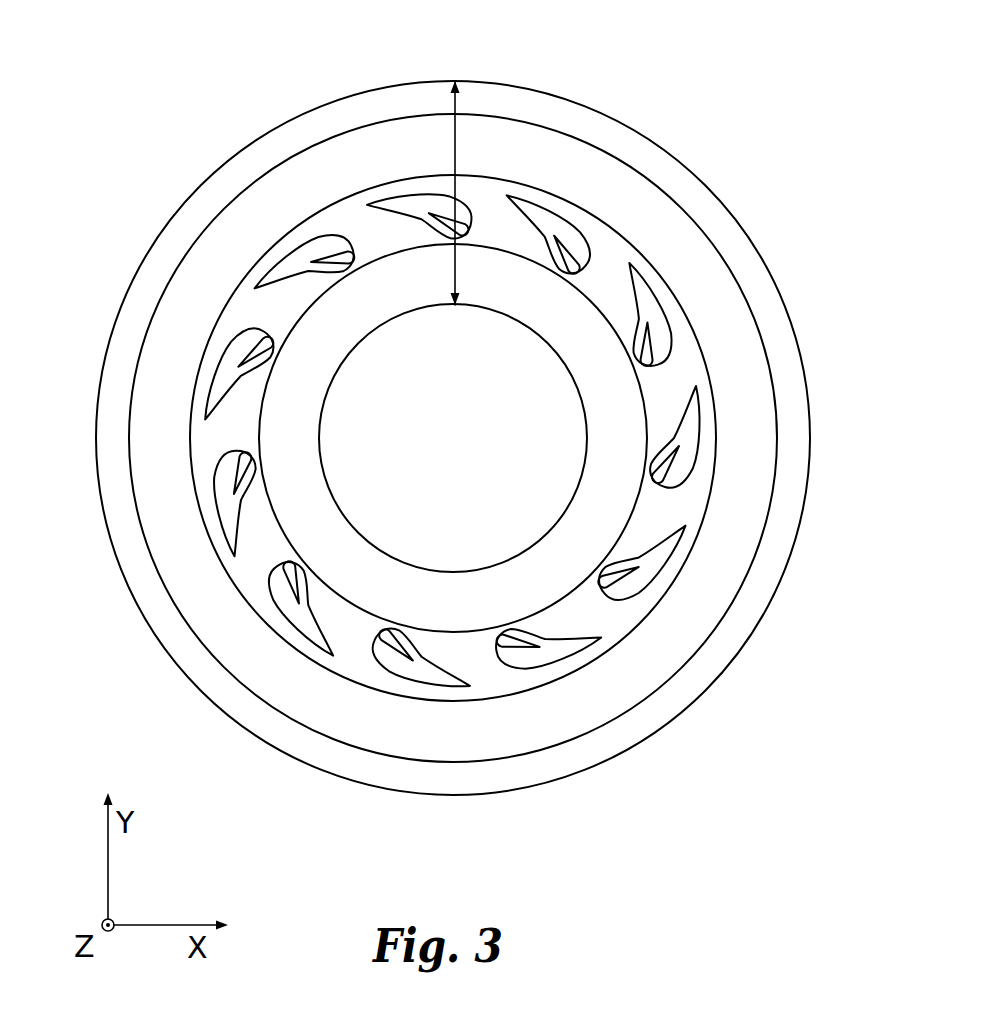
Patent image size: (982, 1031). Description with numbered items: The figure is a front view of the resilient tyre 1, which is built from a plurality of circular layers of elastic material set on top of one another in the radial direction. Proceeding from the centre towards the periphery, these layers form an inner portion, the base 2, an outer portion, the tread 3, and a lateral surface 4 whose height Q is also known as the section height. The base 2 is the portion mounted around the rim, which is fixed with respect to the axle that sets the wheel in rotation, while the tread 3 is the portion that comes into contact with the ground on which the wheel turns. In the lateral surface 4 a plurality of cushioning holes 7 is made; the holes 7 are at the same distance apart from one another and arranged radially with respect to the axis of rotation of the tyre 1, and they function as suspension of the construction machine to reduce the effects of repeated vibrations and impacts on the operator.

The resilient tyre 1 is at (176, 113).
The base 2 is at (300, 412).
The tread 3 is at (577, 755).
The lateral surface 4 is at (255, 555).
The cushioning holes 7 is at (284, 258).
The height Q is at (457, 158).